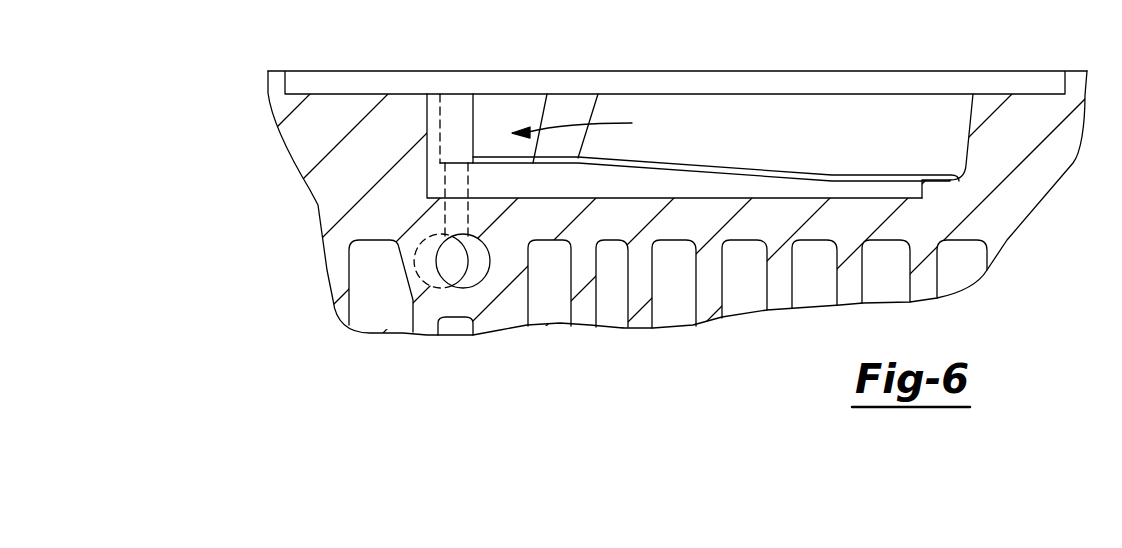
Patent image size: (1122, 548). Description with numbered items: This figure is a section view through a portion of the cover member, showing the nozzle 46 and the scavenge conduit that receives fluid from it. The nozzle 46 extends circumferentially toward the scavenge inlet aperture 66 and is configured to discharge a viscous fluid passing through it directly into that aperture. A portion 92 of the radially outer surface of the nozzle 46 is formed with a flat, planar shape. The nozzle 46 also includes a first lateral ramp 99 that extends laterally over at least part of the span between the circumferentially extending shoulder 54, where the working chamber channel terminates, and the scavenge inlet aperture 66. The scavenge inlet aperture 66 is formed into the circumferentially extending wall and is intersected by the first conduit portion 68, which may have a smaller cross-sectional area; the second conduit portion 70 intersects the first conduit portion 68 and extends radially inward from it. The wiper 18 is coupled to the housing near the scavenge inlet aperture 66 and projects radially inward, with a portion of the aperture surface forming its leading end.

The wiper 18 is at (461, 110).
The nozzle 46 is at (585, 126).
The circumferentially extending shoulder 54 is at (873, 180).
The scavenge inlet aperture 66 is at (450, 122).
The first conduit portion 68 is at (458, 213).
The second conduit portion 70 is at (478, 267).
The portion of the radially outer surface 92 is at (502, 107).
The first lateral ramp 99 is at (657, 167).